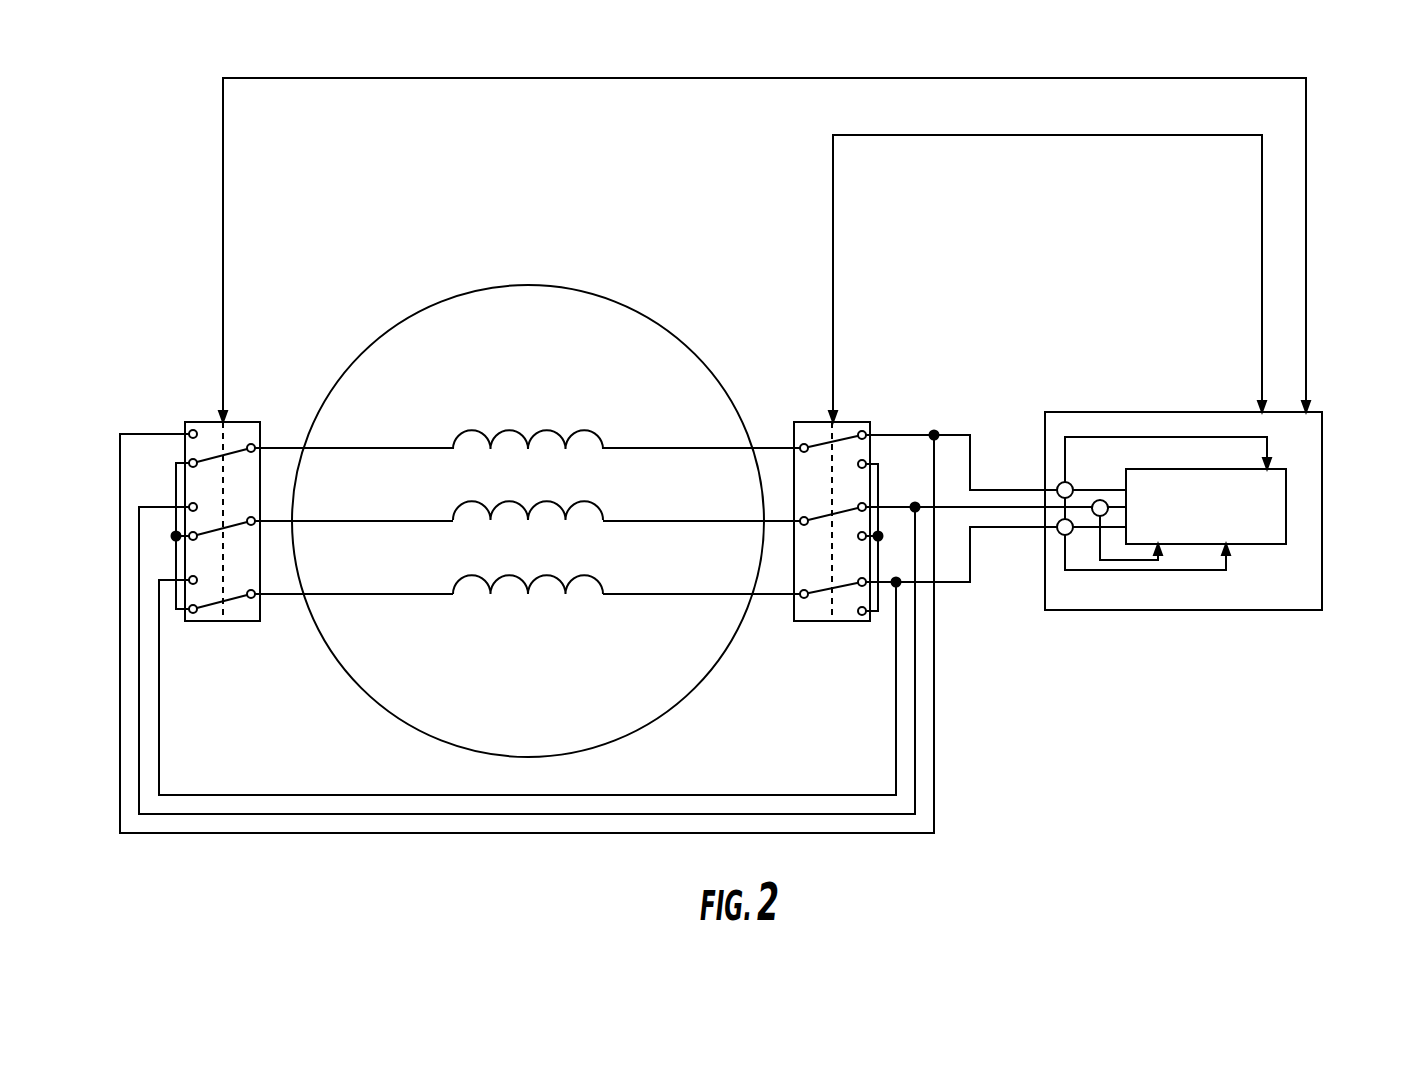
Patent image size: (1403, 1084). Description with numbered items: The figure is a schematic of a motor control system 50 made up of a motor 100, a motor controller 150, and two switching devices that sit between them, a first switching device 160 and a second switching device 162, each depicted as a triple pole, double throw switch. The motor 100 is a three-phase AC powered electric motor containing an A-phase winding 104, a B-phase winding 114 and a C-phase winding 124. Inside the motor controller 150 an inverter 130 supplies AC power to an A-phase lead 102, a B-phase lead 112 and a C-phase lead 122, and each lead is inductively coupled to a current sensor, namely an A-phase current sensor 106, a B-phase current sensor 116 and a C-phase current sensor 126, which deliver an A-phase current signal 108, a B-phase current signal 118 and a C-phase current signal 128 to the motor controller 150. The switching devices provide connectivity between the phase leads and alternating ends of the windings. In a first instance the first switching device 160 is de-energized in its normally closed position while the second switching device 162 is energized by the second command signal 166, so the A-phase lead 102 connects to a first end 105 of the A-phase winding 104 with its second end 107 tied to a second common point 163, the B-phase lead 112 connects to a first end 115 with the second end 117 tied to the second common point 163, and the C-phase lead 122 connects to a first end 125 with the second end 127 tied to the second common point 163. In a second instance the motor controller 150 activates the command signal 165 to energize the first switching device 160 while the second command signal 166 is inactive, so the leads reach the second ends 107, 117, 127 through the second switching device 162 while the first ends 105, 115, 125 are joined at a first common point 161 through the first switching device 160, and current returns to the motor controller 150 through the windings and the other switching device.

The motor control system 50 is at (1176, 775).
The motor 100 is at (557, 287).
The A-phase lead 102 is at (1030, 490).
The A-phase winding 104 is at (470, 430).
The first end of A-phase winding 105 is at (657, 449).
The A-phase current sensor 106 is at (1071, 484).
The second end of A-phase winding 107 is at (360, 448).
The A-phase current signal 108 is at (1190, 438).
The B-phase lead 112 is at (990, 490).
The B-phase winding 114 is at (597, 503).
The first end of B-phase winding 115 is at (687, 520).
The B-phase current sensor 116 is at (1104, 501).
The second end of B-phase winding 117 is at (308, 520).
The B-phase current signal 118 is at (1093, 542).
The C-phase lead 122 is at (1003, 527).
The C-phase winding 124 is at (597, 577).
The first end of C-phase winding 125 is at (693, 594).
The C-phase current sensor 126 is at (1053, 532).
The second end of C-phase winding 127 is at (312, 594).
The C-phase current signal 128 is at (1068, 572).
The inverter 130 is at (1286, 507).
The motor controller 150 is at (1297, 610).
The first switching device 160 is at (832, 623).
The first common point 161 is at (880, 478).
The second switching device 162 is at (222, 623).
The second common point 163 is at (177, 478).
The command signal 165 is at (833, 218).
The second command signal 166 is at (223, 185).